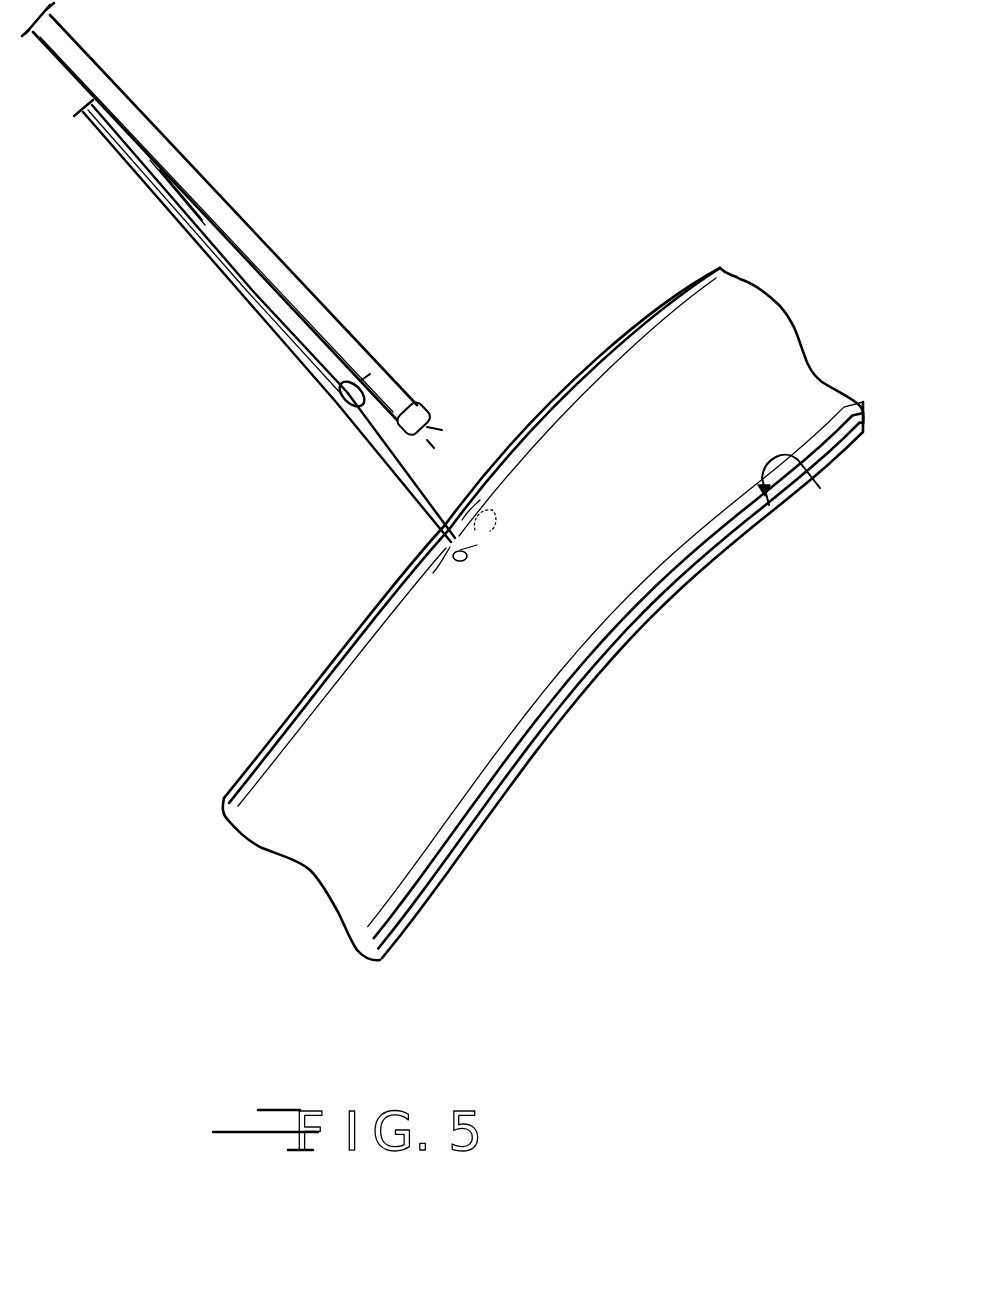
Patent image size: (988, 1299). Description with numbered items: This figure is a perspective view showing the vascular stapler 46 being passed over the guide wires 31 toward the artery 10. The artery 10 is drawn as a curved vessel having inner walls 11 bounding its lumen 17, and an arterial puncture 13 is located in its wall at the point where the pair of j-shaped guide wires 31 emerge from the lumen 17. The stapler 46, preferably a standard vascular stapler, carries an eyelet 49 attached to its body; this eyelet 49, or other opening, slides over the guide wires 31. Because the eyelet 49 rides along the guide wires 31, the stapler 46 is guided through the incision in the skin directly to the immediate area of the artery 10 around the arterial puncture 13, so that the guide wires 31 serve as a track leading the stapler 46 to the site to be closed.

The artery 10 is at (648, 310).
The inner walls 11 is at (820, 488).
The arterial puncture 13 is at (496, 528).
The lumen 17 is at (295, 876).
The j-shaped guide wires 31 is at (218, 265).
The vascular stapler 46 is at (296, 278).
The eyelet 49 is at (337, 405).